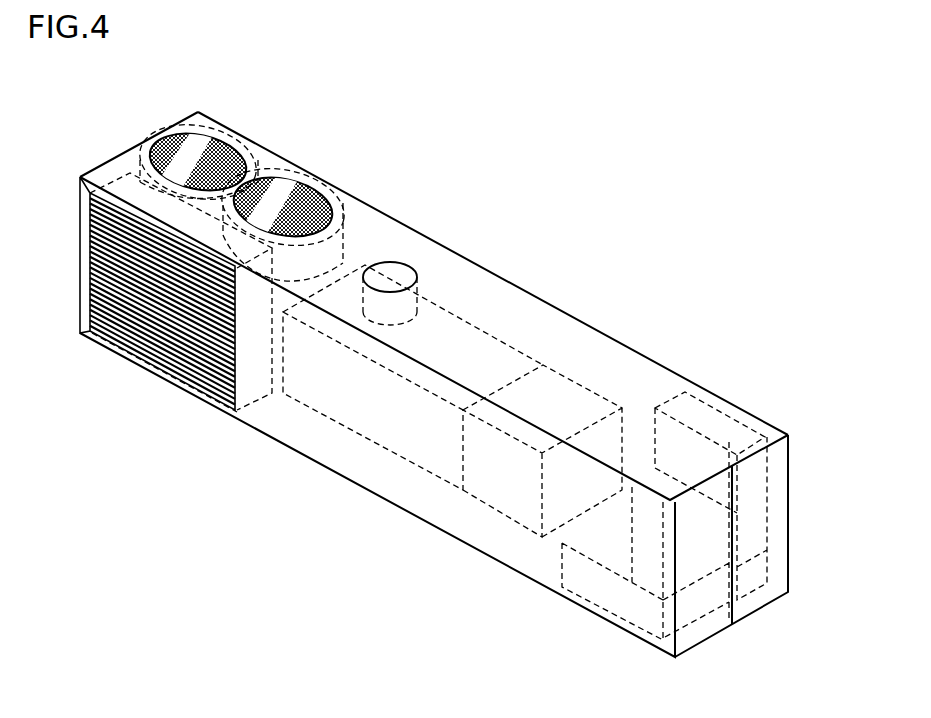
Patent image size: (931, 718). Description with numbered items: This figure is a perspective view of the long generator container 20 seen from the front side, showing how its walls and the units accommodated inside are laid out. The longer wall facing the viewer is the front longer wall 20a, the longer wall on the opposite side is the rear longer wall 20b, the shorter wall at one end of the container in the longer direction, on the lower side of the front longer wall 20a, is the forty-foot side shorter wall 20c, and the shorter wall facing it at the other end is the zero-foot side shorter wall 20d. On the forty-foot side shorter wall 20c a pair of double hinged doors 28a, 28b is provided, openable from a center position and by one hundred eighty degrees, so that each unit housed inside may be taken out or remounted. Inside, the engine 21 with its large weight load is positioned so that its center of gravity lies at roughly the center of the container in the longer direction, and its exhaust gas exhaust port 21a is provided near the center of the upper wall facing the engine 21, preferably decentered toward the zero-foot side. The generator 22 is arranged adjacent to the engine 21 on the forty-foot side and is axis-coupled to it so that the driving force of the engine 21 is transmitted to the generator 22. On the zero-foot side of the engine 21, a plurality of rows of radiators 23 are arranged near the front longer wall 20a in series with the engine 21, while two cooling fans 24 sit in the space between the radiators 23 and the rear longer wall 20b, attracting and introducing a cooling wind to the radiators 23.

The generator container 20 is at (572, 231).
The front longer wall 20a is at (365, 466).
The rear longer wall 20b is at (552, 300).
The 40 f side shorter wall 20c is at (742, 596).
The 0 f side shorter wall 20d is at (77, 193).
The engine 21 is at (448, 332).
The exhaust gas exhaust port 21a is at (422, 288).
The generator 22 is at (553, 387).
The radiators 23 is at (247, 357).
The cooling fans 24 is at (220, 148).
The double hinged door 28a is at (698, 610).
The double hinged door 28b is at (772, 575).